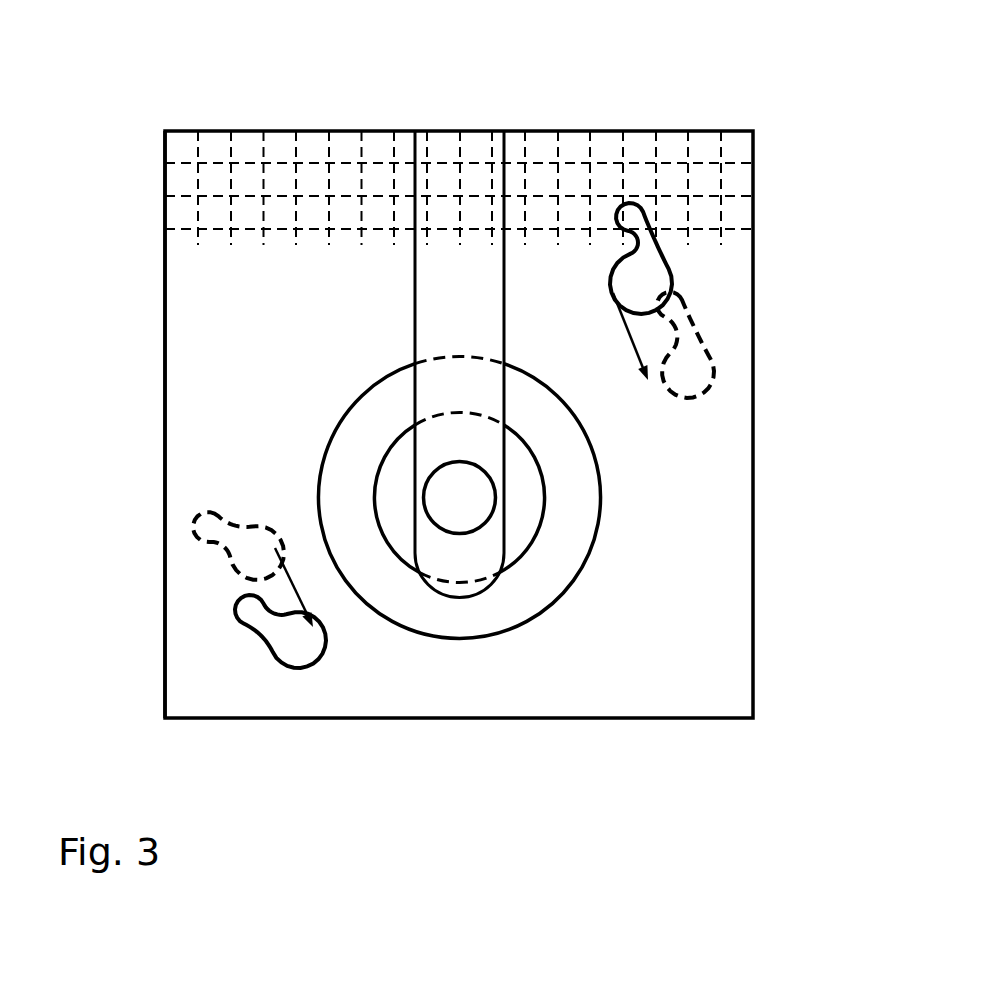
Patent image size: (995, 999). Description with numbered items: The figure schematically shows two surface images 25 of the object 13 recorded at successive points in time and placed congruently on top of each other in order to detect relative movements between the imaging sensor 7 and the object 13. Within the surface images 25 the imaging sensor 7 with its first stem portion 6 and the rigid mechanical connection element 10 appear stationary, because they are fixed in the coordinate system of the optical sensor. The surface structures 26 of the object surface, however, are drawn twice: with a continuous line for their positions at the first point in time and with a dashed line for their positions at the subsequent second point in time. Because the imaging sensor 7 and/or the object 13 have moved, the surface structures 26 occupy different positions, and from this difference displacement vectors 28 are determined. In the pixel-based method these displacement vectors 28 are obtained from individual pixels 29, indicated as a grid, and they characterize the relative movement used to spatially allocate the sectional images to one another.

The first stem portion 6 is at (457, 270).
The imaging first sensor 7 is at (588, 501).
The rigid mechanical connection element 10 is at (458, 518).
The object 13 is at (190, 360).
The surface images 25 is at (163, 265).
The surface structures 26 is at (675, 312).
The displacement vectors 28 is at (625, 337).
The pixels 29 is at (184, 135).